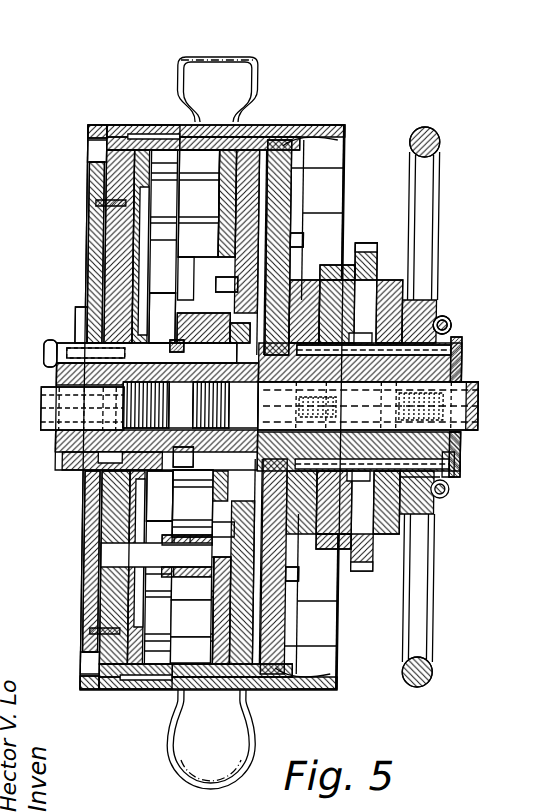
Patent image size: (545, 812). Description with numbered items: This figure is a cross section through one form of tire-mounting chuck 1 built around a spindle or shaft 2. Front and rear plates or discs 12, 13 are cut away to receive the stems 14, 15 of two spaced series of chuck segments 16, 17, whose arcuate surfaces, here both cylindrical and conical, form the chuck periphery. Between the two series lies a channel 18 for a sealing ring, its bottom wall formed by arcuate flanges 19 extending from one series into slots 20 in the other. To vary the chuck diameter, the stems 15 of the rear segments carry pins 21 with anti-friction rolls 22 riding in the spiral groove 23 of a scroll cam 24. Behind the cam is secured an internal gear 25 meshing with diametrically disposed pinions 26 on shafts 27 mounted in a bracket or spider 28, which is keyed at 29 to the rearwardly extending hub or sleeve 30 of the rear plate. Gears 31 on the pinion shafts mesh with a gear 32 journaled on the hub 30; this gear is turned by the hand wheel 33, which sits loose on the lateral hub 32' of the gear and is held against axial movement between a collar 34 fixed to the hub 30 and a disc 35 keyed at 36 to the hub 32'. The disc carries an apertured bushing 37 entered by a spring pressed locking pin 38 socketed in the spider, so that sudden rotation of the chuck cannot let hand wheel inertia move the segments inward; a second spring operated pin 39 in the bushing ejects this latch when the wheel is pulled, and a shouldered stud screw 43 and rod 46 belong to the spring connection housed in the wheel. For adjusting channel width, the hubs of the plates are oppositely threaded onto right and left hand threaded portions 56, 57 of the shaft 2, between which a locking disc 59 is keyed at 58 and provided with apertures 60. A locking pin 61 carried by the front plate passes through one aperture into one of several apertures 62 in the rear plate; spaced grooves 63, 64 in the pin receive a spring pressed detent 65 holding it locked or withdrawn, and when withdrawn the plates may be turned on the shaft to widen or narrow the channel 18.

The housing 1 is at (86, 661).
The spindle 2 is at (52, 412).
The front chuck plate 12 is at (104, 223).
The rear chuck plate 13 is at (93, 212).
The stems 14 is at (118, 302).
The stems 15 is at (231, 232).
The chuck segments 16 is at (110, 129).
The chuck segments 17 is at (332, 150).
The channel 18 is at (238, 130).
The arcuate flanges 19 is at (193, 130).
The slots 20 is at (137, 135).
The pins 21 is at (241, 283).
The anti-friction rolls 22 is at (270, 303).
The spiral groove 23 is at (232, 198).
The scroll cam 24 is at (304, 177).
The internal gear 25 is at (319, 240).
The pinions 26 is at (340, 272).
The shafts 27 is at (352, 270).
The bracket or spider 28 is at (339, 487).
The key 29 is at (372, 288).
The hub or sleeve 30 is at (454, 372).
The gears 31 is at (375, 262).
The gear 32 is at (390, 321).
The lateral hub 32' is at (480, 359).
The hand wheel 33 is at (437, 140).
The collar 34 is at (464, 468).
The disc 35 is at (402, 288).
The key 36 is at (449, 325).
The apertured bushing 37 is at (462, 453).
The locking pin 38 is at (442, 485).
The second spring operated pin 39 is at (482, 382).
The shouldered stud screw 43 is at (505, 290).
The rod 46 is at (449, 327).
The right hand threaded portion 56 is at (70, 435).
The left hand threaded portion 57 is at (222, 407).
The key 58 is at (158, 405).
The locking disc 59 is at (180, 352).
The apertures 60 is at (176, 340).
The locking pin 61 is at (47, 352).
The apertures 62 is at (241, 350).
The groove 63 is at (84, 360).
The groove 64 is at (141, 359).
The spring pressed detent 65 is at (84, 305).